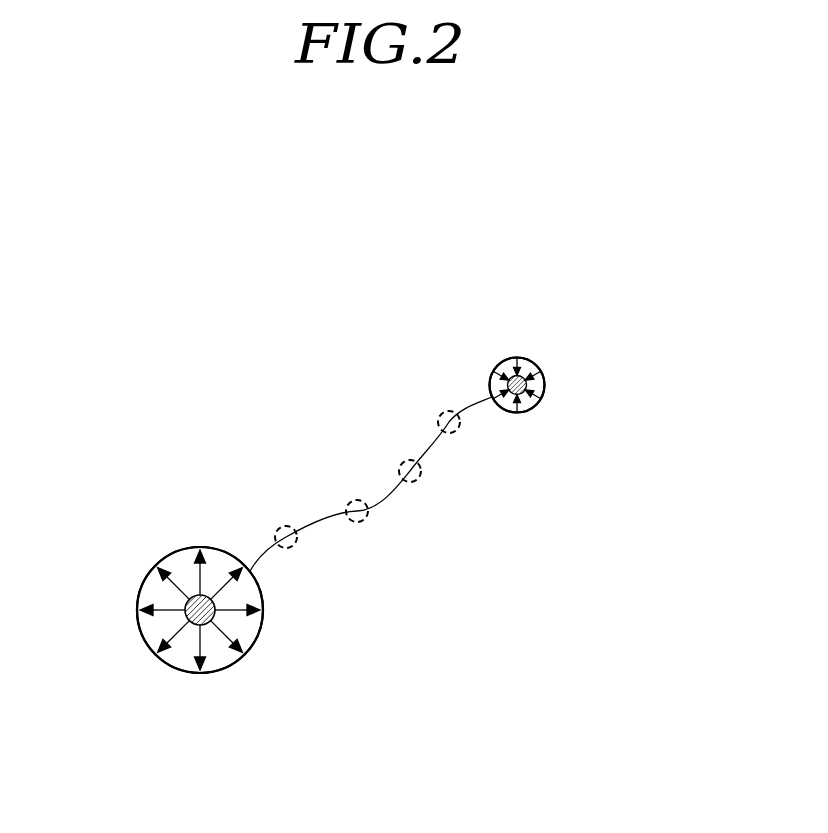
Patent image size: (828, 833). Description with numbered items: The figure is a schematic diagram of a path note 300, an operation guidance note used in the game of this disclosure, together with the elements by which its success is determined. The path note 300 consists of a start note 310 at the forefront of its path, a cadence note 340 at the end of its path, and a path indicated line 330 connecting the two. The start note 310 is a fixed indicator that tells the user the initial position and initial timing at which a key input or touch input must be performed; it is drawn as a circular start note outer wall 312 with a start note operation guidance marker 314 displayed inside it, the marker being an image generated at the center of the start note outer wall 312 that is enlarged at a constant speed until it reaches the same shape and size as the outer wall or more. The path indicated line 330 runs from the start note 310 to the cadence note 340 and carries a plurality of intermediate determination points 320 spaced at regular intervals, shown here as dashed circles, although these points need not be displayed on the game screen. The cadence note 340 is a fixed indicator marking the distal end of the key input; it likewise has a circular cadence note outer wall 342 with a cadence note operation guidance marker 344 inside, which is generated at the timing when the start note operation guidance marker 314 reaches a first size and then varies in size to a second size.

The path note 300 is at (586, 253).
The start note 310 is at (158, 537).
The start note outer wall 312 is at (223, 672).
The start note operation guidance marker 314 is at (183, 616).
The intermediate determination points 320 is at (442, 413).
The path indicated line 330 is at (390, 493).
The cadence note 340 is at (576, 368).
The cadence note outer wall 342 is at (528, 353).
The cadence note operation guidance marker 344 is at (510, 374).